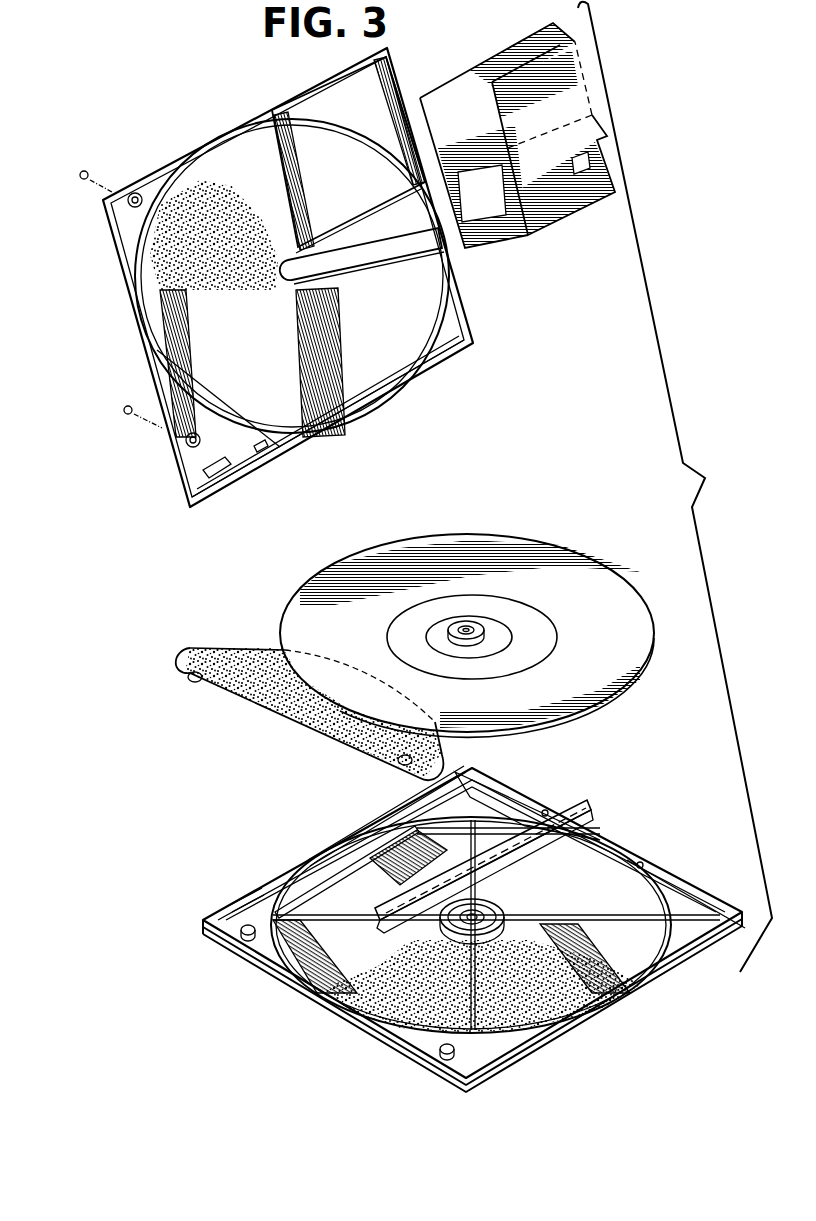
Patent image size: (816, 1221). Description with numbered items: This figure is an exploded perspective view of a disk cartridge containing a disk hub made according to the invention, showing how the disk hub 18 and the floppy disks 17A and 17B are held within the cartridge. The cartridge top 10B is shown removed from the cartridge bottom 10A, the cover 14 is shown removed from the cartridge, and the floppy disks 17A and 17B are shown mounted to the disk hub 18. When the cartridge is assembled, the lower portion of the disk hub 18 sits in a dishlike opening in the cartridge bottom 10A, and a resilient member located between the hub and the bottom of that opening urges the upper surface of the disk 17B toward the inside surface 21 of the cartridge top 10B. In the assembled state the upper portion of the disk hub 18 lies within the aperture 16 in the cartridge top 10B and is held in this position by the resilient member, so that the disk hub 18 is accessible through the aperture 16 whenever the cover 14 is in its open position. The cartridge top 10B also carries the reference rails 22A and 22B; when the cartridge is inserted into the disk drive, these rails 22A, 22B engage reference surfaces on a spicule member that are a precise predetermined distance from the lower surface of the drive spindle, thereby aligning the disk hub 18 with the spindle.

The cartridge bottom 10A is at (273, 973).
The cartridge top 10B is at (137, 328).
The cover 14 is at (470, 66).
The aperture 16 is at (292, 281).
The floppy disk 17A is at (561, 722).
The floppy disk 17B is at (604, 587).
The disk hub 18 is at (455, 625).
The inside surface 21 is at (281, 453).
The reference rail 22A is at (397, 205).
The reference rail 22B is at (354, 268).